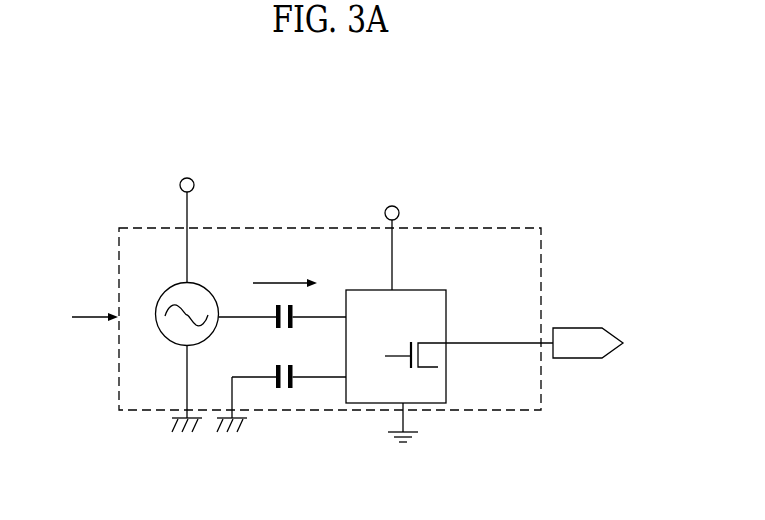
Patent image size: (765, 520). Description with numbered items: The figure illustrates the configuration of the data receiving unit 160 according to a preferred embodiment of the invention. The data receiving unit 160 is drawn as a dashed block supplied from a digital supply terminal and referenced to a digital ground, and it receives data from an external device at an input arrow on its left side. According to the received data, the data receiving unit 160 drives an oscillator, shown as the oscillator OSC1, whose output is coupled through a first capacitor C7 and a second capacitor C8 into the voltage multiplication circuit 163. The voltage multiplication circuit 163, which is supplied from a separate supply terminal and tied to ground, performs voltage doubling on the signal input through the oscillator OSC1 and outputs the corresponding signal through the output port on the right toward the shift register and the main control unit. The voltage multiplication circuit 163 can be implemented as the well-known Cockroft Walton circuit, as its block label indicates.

The data receiving unit 160 is at (130, 228).
The voltage multiplication circuit 163 is at (446, 385).
The oscillator OSC1 is at (206, 302).
The capacitor C7 is at (283, 307).
The capacitor C8 is at (289, 367).